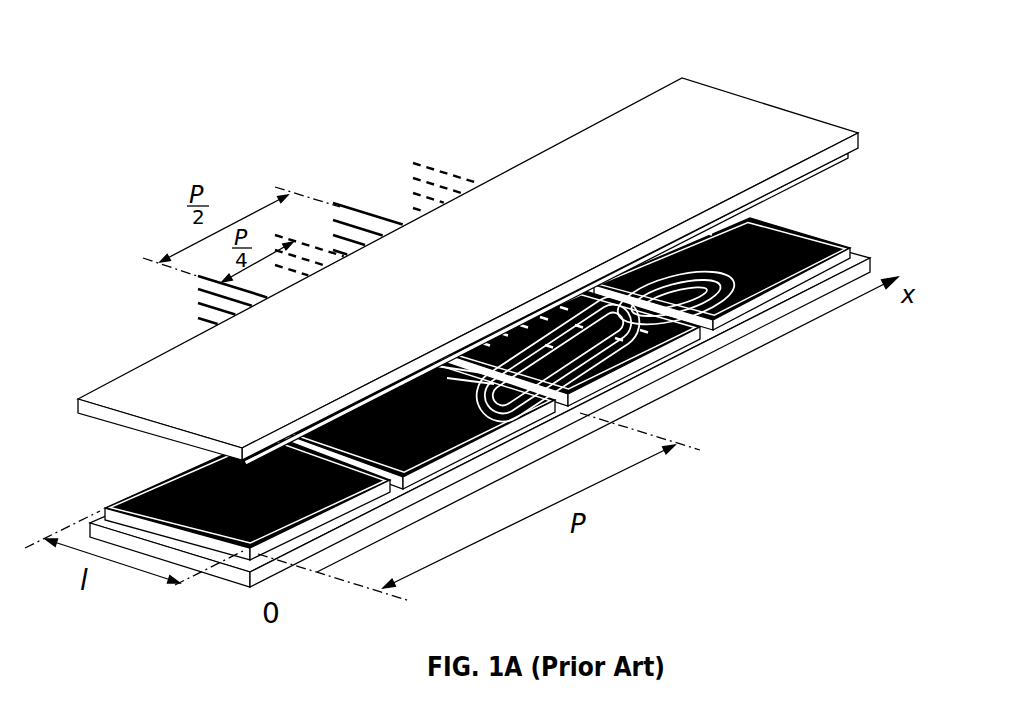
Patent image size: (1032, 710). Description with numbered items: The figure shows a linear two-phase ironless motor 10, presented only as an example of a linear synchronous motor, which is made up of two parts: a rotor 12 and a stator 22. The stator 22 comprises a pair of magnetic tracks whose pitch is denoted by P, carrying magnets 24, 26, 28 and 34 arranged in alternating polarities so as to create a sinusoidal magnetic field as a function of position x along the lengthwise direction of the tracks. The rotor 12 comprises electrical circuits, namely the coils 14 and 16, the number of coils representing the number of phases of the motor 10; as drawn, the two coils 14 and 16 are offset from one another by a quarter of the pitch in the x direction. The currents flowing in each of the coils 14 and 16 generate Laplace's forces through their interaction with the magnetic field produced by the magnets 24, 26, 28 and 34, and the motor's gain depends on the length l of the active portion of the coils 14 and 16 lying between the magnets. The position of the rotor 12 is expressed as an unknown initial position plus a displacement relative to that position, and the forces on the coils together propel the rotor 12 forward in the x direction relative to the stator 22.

The linear two-phase ironless motor 10 is at (513, 62).
The rotor 12 is at (635, 383).
The coil 14 is at (200, 297).
The coil 16 is at (410, 183).
The stator 22 is at (110, 418).
The magnet 24 is at (287, 440).
The magnet 26 is at (433, 366).
The magnet 28 is at (703, 270).
The magnet 34 is at (764, 197).